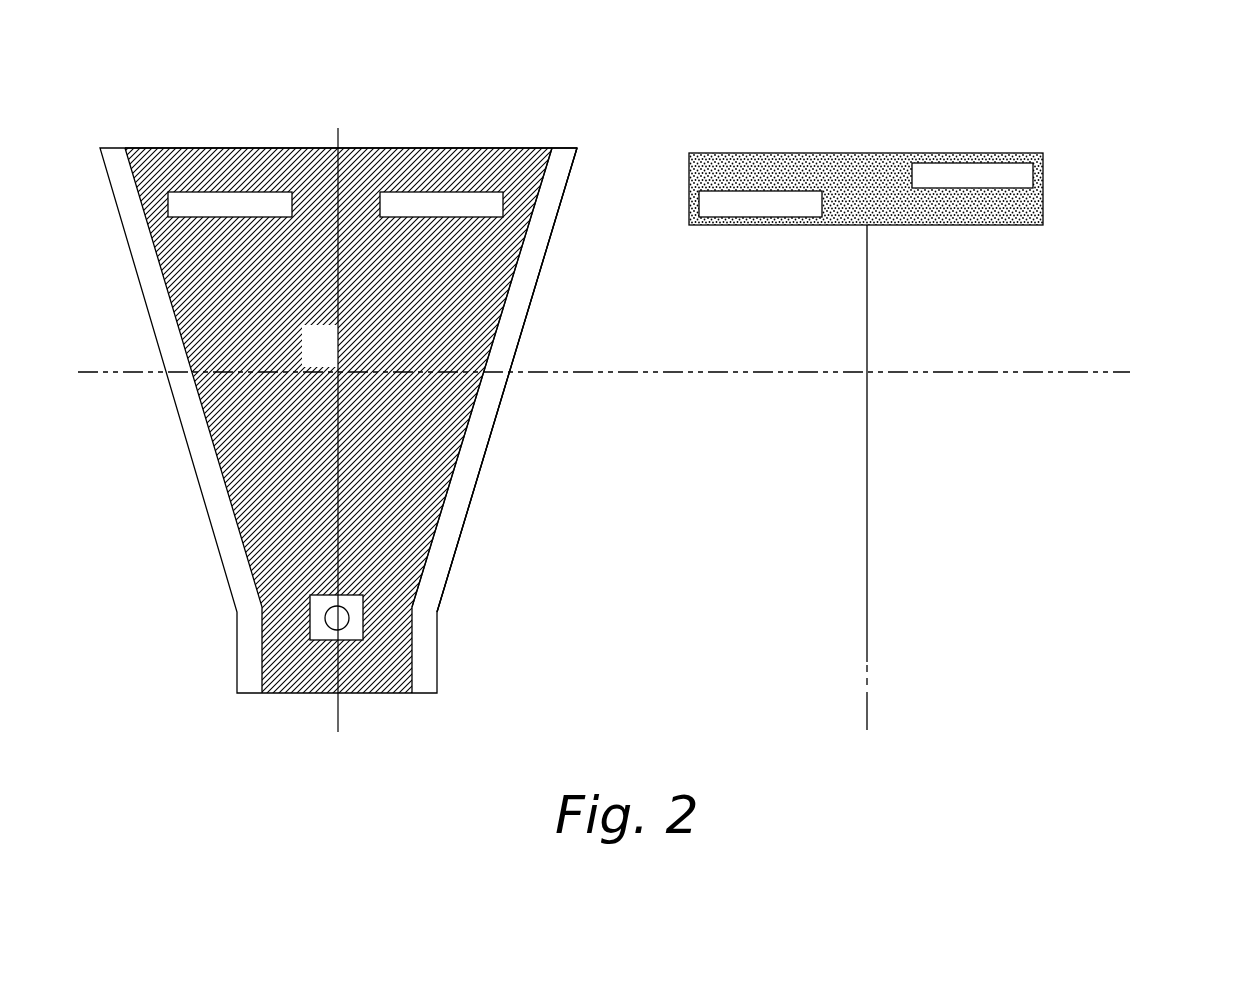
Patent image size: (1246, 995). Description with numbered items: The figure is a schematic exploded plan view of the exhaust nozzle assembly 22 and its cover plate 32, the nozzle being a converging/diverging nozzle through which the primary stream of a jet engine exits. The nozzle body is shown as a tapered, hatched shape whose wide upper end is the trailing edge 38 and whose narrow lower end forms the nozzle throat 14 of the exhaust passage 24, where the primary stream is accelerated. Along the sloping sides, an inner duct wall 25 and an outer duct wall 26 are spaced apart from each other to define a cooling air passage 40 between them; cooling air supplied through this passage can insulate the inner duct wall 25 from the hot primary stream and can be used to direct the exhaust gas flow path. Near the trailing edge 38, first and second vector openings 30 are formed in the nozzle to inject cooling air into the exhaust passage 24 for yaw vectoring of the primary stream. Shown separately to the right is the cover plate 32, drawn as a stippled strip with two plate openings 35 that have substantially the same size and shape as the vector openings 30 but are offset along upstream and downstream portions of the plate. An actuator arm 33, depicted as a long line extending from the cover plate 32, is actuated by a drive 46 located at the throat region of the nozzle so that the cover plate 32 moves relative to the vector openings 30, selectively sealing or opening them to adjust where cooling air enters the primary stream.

The nozzle throat 14 is at (393, 601).
The exhaust nozzle assembly 22 is at (1134, 110).
The exhaust passage 24 is at (333, 362).
The inner duct wall 25 is at (493, 343).
The outer duct wall 26 is at (481, 466).
The vector openings 30 is at (237, 194).
The cover plate 32 is at (970, 225).
The actuator arm 33 is at (867, 452).
The plate openings 35 is at (1000, 165).
The trailing edge 38 is at (178, 148).
The cooling air passage 40 is at (549, 272).
The drive 46 is at (310, 626).